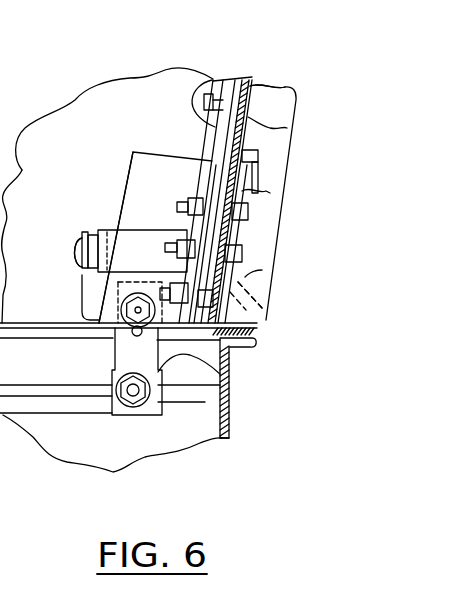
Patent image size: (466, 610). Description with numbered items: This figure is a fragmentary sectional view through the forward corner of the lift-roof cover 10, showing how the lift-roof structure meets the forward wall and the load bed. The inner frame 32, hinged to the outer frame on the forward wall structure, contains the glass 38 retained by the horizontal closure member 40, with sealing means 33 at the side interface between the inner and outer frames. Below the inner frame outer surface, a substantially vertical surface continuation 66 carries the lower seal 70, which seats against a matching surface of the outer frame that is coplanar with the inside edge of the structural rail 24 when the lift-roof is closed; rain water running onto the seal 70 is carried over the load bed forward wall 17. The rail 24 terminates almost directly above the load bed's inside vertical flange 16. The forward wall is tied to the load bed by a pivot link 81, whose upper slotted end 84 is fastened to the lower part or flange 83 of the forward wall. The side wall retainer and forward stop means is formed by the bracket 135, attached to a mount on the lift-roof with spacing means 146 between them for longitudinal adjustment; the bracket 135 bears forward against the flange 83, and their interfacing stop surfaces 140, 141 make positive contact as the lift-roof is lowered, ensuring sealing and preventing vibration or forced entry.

The lift-roof cover 10 is at (63, 407).
The inside vertical flange 16 is at (24, 367).
The load bed forward wall 17 is at (230, 415).
The structural rail 24 is at (47, 323).
The inner frame 32 is at (287, 128).
The sealing means 33 is at (226, 137).
The glass 38 is at (247, 80).
The horizontal closure member 40 is at (270, 193).
The vertical surface continuation 66 is at (245, 277).
The lower seal 70 is at (260, 290).
The pivot link 81 is at (223, 370).
The flange 83 is at (152, 157).
The pivot link upper slotted end 84 is at (137, 334).
The bracket 135 is at (124, 207).
The stop surface 140 is at (148, 237).
The stop surface 141 is at (245, 225).
The spacing means 146 is at (92, 233).